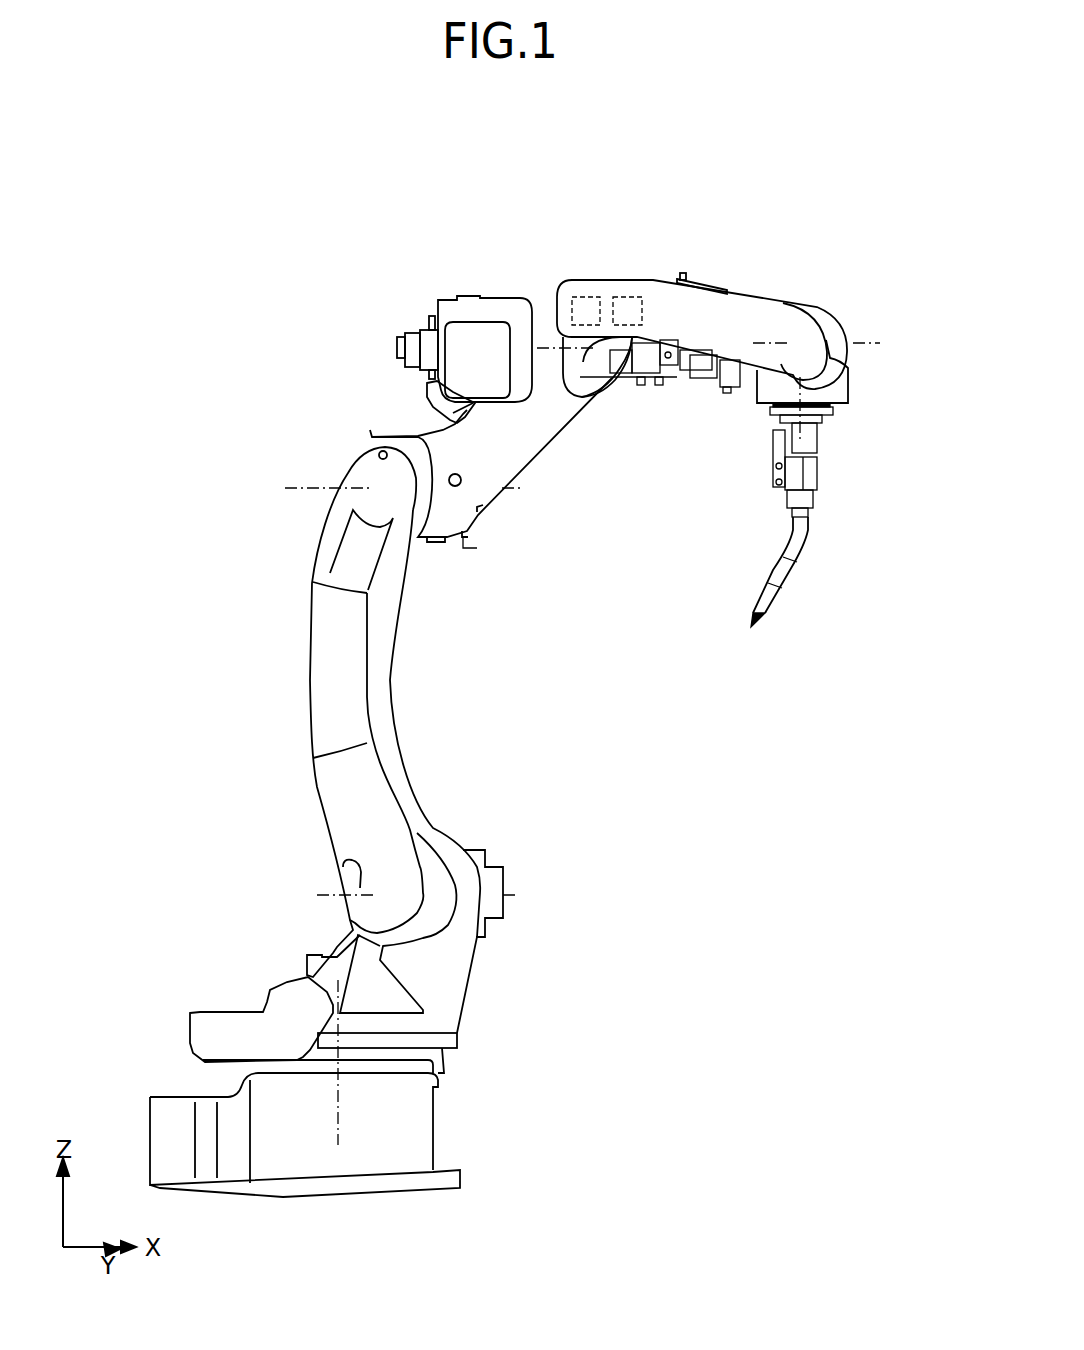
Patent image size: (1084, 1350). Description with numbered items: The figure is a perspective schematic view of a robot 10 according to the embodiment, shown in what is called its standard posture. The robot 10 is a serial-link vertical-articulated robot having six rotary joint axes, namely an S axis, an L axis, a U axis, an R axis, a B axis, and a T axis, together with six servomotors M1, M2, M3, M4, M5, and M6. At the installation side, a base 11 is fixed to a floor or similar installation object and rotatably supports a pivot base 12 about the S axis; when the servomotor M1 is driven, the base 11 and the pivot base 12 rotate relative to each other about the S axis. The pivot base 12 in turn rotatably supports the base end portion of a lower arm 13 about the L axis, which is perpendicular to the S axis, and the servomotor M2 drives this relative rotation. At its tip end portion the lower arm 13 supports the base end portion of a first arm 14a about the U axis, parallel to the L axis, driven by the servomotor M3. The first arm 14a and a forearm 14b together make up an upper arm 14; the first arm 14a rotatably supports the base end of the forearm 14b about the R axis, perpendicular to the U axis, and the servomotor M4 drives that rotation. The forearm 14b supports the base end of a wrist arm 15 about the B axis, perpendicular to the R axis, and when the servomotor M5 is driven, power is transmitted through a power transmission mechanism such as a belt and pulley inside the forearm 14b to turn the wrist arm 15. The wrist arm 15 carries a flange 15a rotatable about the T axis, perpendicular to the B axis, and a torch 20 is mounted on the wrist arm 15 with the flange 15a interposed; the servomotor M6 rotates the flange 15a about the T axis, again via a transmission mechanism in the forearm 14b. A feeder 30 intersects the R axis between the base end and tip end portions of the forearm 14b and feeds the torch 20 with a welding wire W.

The robot 10 is at (323, 208).
The base 11 is at (420, 1130).
The pivot base 12 is at (450, 980).
The lower arm 13 is at (386, 705).
The upper arm 14 is at (608, 429).
The first arm 14a is at (513, 447).
The forearm 14b is at (572, 376).
The wrist arm 15 is at (825, 395).
The flange 15a is at (833, 412).
The torch 20 is at (797, 538).
The feeder 30 is at (673, 389).
The servomotor M1 is at (305, 974).
The servomotor M2 is at (490, 878).
The servomotor M3 is at (463, 540).
The servomotor M4 is at (413, 337).
The servomotor M5 is at (584, 297).
The servomotor M6 is at (628, 297).
The S axis S is at (338, 980).
The L axis L is at (407, 896).
The U axis U is at (390, 489).
The R axis R is at (543, 348).
The B axis B is at (827, 343).
The T axis T is at (815, 431).
The wire W is at (755, 627).